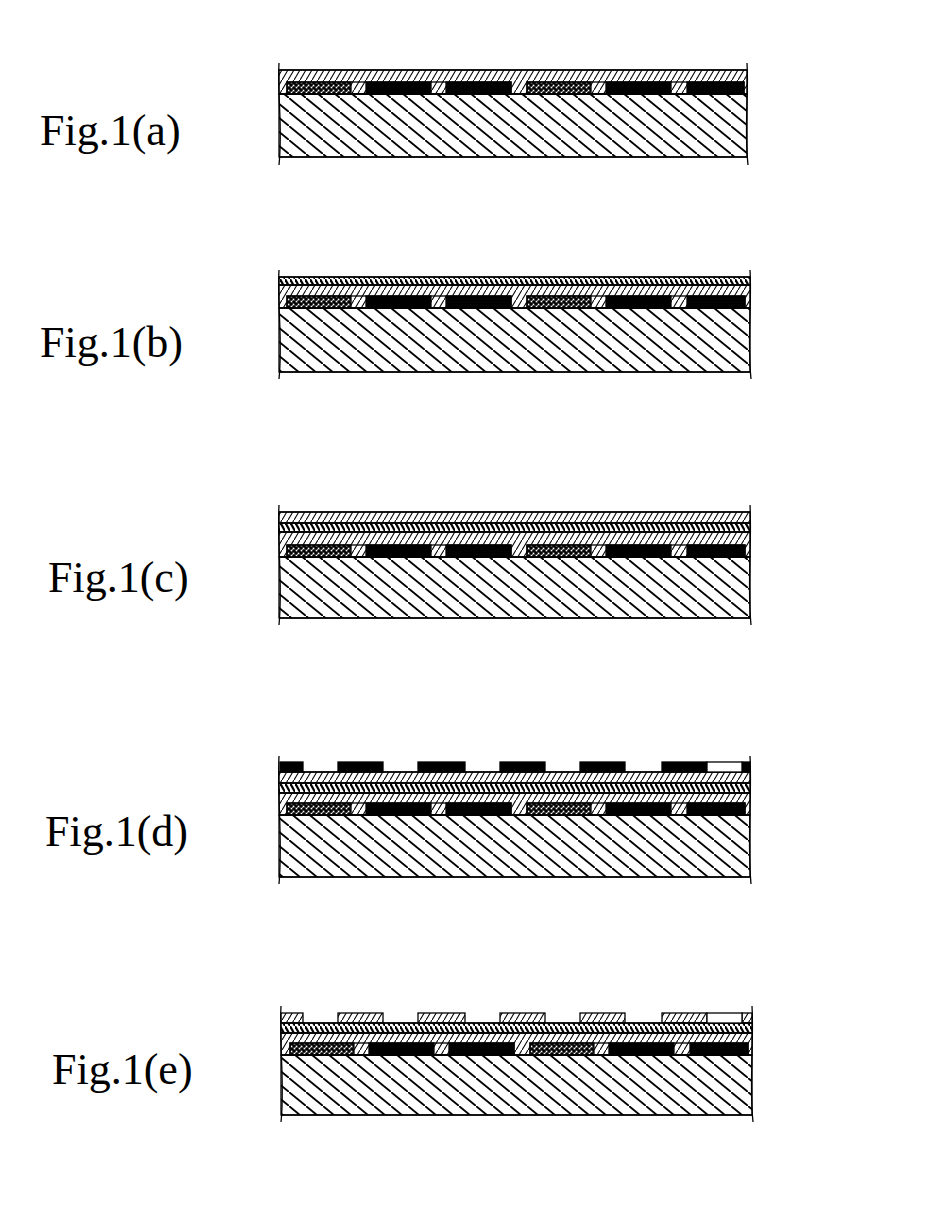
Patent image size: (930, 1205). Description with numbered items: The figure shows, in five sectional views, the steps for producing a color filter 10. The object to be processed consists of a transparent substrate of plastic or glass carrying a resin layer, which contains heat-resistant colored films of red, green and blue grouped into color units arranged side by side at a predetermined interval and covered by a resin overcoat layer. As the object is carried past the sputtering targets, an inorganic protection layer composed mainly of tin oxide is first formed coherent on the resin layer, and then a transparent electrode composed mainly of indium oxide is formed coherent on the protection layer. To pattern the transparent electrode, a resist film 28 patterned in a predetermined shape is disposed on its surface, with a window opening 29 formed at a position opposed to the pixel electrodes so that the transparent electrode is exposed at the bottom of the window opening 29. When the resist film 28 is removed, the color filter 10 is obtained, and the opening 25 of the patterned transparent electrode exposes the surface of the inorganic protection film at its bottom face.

The color filter 10 is at (271, 994).
The opening 25 is at (707, 1005).
The resist film 28 is at (752, 765).
The window opening 29 is at (707, 754).